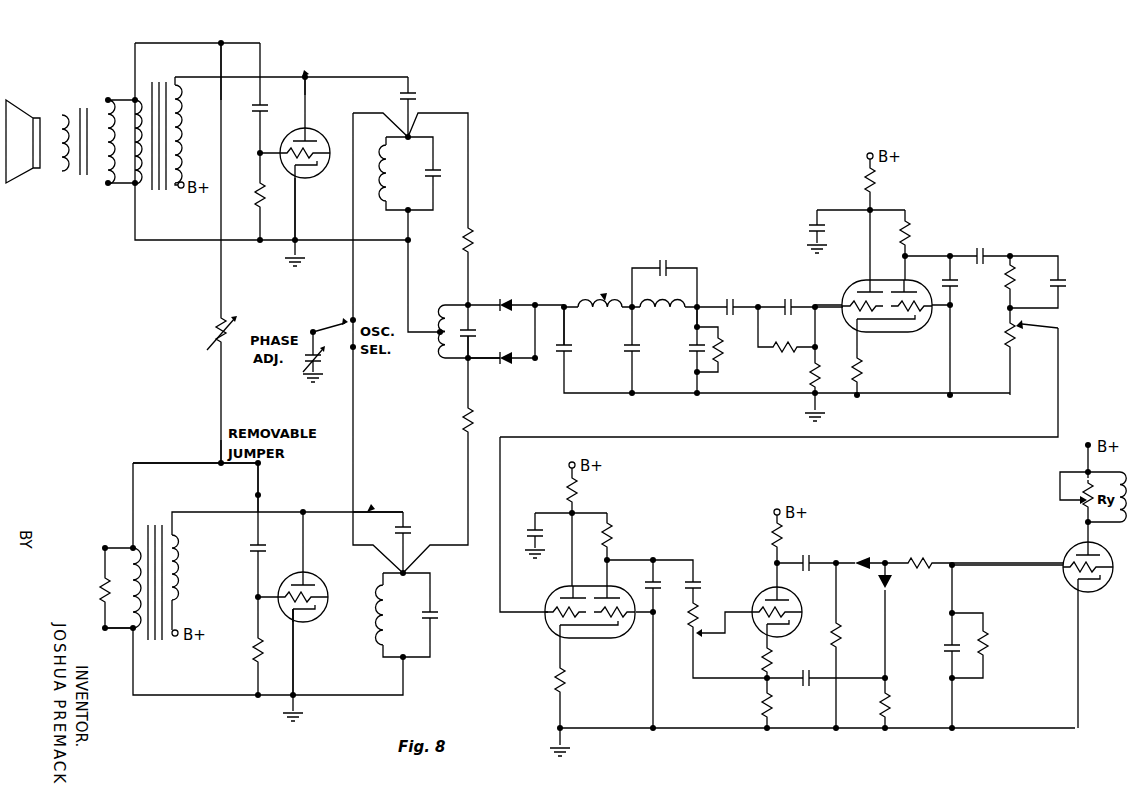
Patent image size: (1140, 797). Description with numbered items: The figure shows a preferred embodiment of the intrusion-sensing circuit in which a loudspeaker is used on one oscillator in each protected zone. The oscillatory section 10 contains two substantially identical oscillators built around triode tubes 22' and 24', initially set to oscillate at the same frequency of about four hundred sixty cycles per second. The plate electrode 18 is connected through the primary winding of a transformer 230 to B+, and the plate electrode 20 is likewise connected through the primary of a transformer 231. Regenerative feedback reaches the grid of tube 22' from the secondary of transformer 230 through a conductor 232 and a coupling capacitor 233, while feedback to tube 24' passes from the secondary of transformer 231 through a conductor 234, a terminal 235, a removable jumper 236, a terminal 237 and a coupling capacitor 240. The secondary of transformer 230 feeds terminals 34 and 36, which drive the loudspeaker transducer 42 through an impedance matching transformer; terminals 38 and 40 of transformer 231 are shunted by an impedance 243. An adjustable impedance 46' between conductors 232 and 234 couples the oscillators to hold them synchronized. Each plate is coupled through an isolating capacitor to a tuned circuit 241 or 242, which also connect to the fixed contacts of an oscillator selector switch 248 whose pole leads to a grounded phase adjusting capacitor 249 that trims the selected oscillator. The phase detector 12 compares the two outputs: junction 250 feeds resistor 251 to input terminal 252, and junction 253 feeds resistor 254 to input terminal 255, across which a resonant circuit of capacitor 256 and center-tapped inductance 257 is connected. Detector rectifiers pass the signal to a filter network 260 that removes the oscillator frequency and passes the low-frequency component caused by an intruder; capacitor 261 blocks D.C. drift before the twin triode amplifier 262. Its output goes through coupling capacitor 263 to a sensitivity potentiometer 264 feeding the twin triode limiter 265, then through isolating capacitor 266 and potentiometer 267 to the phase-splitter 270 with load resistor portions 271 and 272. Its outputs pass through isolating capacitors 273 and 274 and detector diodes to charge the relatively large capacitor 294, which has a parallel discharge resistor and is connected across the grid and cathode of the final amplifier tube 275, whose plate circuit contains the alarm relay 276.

The oscillatory section 10 is at (184, 30).
The phase detector 12 is at (724, 219).
The plate electrode 18 is at (310, 128).
The plate electrode 20 is at (308, 578).
The triode amplifying tube 22' is at (318, 208).
The triode amplifying tube 24' is at (317, 652).
The terminal 34 is at (108, 100).
The terminal 36 is at (108, 186).
The terminal 38 is at (105, 547).
The terminal 40 is at (105, 631).
The condition responsive transducer means 42 is at (28, 114).
The adjustable impedance 46' is at (209, 332).
The transformer 230 is at (162, 192).
The transformer 231 is at (157, 642).
The conductor 232 is at (222, 44).
The coupling capacitor 233 is at (266, 110).
The conductor 234 is at (218, 463).
The terminal 235 is at (195, 476).
The removable jumper 236 is at (260, 465).
The terminal 237 is at (260, 495).
The coupling capacitor 240 is at (249, 548).
The tuned circuit 241 is at (423, 184).
The tuned circuit 242 is at (420, 627).
The impedance 243 is at (102, 584).
The oscillator selector switch 248 is at (312, 331).
The phase adjusting capacitor 249 is at (304, 369).
The junction 250 is at (413, 102).
The resistor 251 is at (473, 240).
The input terminal 252 is at (443, 303).
The junction 253 is at (414, 572).
The resistor 254 is at (473, 421).
The input terminal 255 is at (470, 361).
The capacitor 256 is at (476, 336).
The inductance 257 is at (440, 355).
The filter network 260 is at (602, 292).
The capacitor 261 is at (724, 297).
The twin triode amplifier tube 262 is at (838, 295).
The coupling capacitor 263 is at (982, 254).
The sensitivity potentiometer 264 is at (1004, 333).
The twin triode limiter stage 265 is at (544, 636).
The isolating capacitor 266 is at (702, 583).
The potentiometer 267 is at (702, 645).
The phase-splitter 270 is at (755, 608).
The load resistor portion 271 is at (770, 541).
The load resistor portion 272 is at (771, 700).
The isolating capacitor 273 is at (807, 555).
The isolating capacitor 274 is at (801, 672).
The final amplifier triode tube 275 is at (1068, 551).
The alarm relay 276 is at (1128, 520).
The capacitor 294 is at (942, 649).